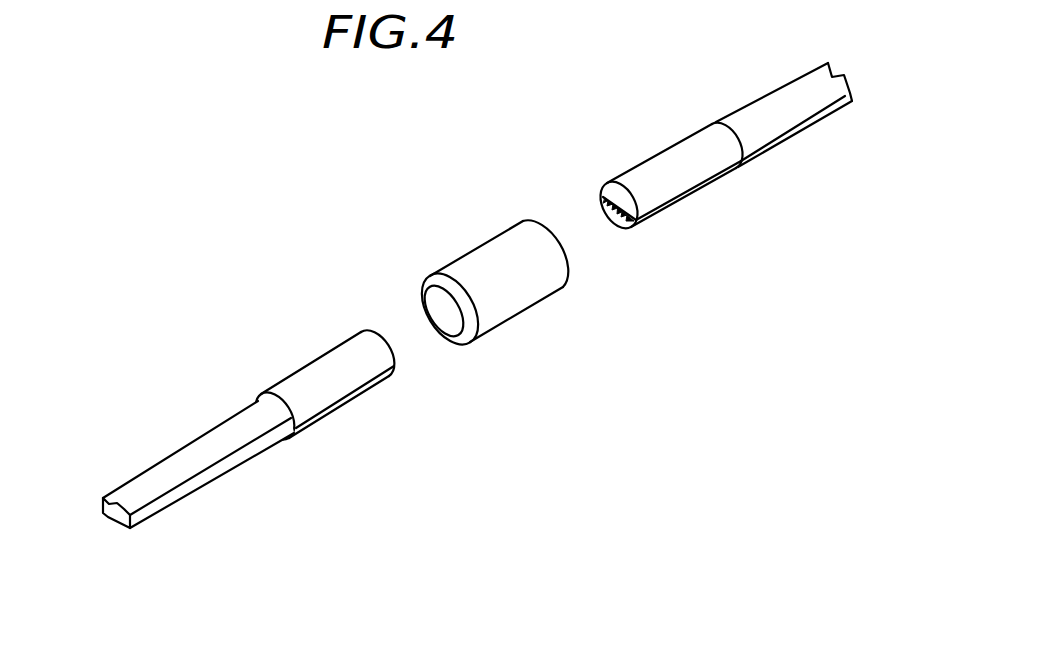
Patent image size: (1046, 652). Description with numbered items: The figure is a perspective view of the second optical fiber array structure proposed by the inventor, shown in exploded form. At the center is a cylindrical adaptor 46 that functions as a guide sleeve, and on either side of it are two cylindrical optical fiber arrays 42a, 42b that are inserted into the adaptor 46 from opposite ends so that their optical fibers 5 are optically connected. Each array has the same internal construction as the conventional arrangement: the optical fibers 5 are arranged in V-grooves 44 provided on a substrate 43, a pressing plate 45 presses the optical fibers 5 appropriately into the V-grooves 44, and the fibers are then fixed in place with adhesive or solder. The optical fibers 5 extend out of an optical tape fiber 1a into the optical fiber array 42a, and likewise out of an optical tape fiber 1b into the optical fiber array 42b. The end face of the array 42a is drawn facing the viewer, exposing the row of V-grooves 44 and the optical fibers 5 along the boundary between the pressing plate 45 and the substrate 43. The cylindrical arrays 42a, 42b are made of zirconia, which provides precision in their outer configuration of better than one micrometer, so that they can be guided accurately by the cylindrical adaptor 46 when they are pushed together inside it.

The optical tape fiber 1a is at (775, 97).
The optical tape fiber 1b is at (145, 468).
The optical fiber 5 is at (603, 195).
The optical fiber array 42a is at (647, 233).
The optical fiber array 42b is at (281, 349).
The substrate 43 is at (669, 207).
The V-groove 44 is at (626, 291).
The pressing plate 45 is at (712, 162).
The adaptor 46 is at (431, 240).